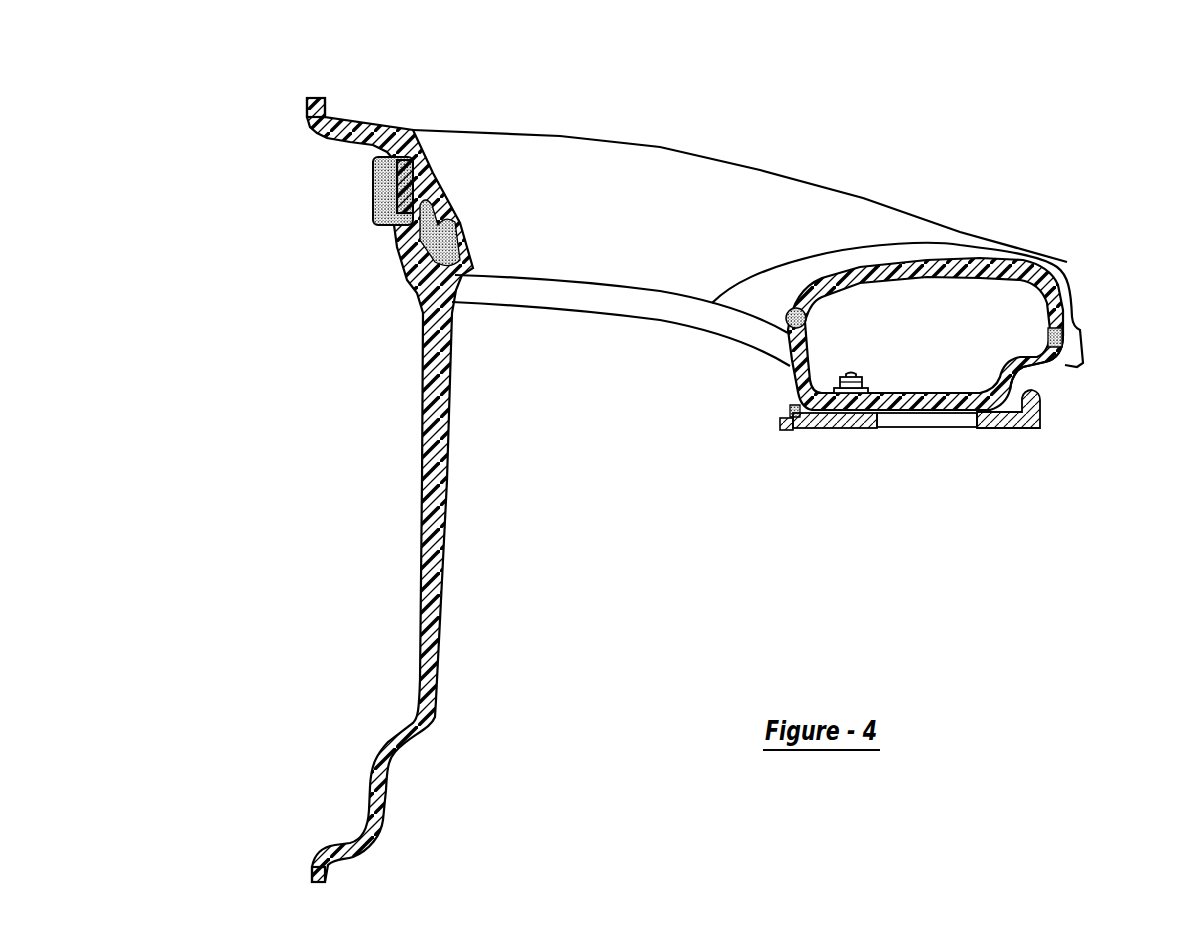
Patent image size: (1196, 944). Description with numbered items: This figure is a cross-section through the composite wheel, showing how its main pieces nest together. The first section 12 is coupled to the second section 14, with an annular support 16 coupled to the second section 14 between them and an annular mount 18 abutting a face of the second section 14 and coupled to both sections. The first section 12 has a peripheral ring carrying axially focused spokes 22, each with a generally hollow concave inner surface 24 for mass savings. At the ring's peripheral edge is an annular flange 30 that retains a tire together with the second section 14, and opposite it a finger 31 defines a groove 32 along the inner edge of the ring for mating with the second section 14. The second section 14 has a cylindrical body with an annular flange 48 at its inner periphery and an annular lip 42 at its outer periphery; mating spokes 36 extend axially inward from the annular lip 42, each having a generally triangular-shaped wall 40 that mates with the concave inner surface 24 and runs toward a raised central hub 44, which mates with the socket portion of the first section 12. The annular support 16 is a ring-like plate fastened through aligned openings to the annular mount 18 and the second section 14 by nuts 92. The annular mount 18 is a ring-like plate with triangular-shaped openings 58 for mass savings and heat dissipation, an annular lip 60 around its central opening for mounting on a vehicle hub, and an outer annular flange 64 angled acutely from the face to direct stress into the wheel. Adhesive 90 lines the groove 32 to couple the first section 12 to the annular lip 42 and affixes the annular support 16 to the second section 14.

The first section 12 is at (872, 199).
The second section 14 is at (410, 420).
The annular support 16 is at (886, 388).
The annular mount 18 is at (808, 440).
The spokes 22 is at (673, 169).
The concave inner surface 24 is at (974, 341).
The annular flange 30 is at (315, 112).
The finger 31 is at (377, 213).
The groove 32 is at (387, 183).
The mating spokes 36 is at (582, 297).
The triangular-shaped wall 40 is at (793, 358).
The annular lip 42 is at (400, 237).
The central hub 44 is at (1047, 370).
The annular flange 48 is at (310, 873).
The triangular-shaped openings 58 is at (927, 420).
The annular lip 60 is at (1025, 431).
The annular flange 64 is at (789, 431).
The adhesive 90 is at (410, 281).
The nuts 92 is at (855, 372).